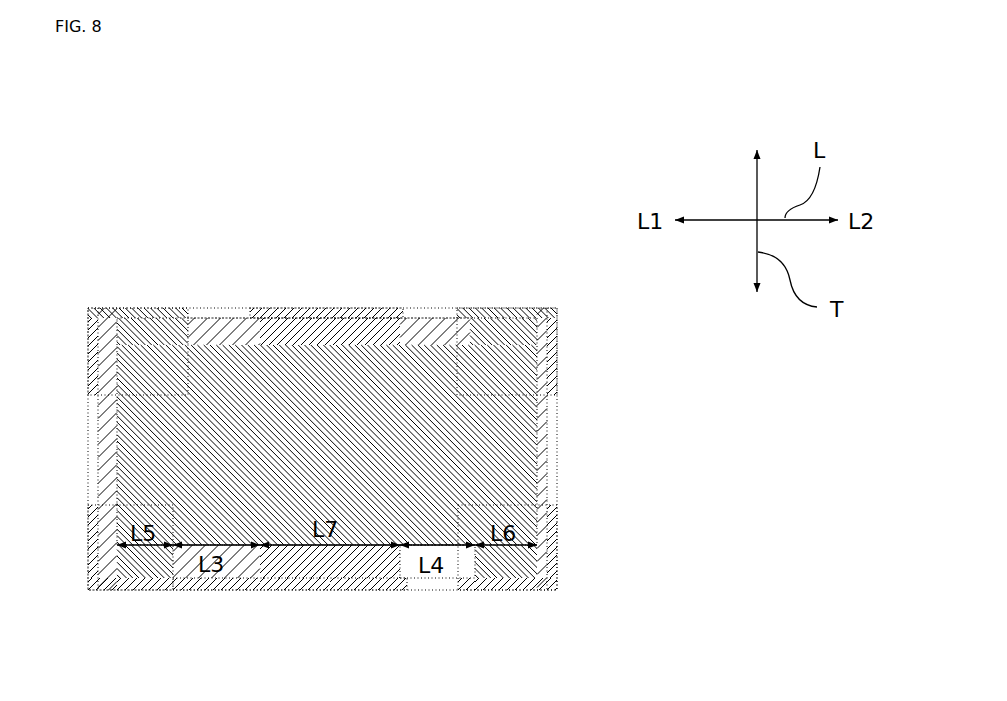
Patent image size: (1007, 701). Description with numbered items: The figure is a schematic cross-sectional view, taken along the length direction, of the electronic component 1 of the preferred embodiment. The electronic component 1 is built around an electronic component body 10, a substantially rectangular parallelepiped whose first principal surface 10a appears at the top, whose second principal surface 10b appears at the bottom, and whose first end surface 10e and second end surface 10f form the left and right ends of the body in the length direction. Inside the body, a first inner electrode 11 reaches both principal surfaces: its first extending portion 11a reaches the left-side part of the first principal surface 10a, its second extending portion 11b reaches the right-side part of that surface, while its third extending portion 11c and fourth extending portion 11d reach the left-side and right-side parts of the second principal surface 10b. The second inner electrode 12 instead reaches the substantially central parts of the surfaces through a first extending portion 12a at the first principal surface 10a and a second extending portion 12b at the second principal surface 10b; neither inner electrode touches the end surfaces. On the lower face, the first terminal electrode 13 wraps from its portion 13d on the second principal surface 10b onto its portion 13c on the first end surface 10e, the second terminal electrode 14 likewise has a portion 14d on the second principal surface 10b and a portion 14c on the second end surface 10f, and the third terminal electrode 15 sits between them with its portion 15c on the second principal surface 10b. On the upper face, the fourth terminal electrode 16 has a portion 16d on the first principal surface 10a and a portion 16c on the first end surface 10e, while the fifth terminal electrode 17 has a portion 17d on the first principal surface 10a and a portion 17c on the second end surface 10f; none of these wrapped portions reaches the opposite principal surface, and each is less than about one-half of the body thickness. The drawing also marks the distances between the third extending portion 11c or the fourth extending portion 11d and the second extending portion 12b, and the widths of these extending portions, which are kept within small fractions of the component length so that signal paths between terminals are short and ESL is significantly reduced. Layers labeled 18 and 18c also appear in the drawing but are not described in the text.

The electronic component 1 is at (443, 293).
The electronic component body 10 is at (207, 308).
The first principal surface 10a is at (220, 307).
The second principal surface 10b is at (220, 580).
The first end surface 10e is at (100, 432).
The second end surface 10f is at (550, 426).
The first inner electrode 11 is at (428, 578).
The first extending portion 11a is at (162, 308).
The second extending portion 11b is at (490, 307).
The third extending portion 11c is at (147, 583).
The fourth extending portion 11d is at (493, 592).
The second inner electrode 12 is at (273, 583).
The first extending portion 12a is at (372, 308).
The second extending portion 12b is at (300, 587).
The first terminal electrode 13 is at (122, 585).
The portion on the first end surface 13c is at (95, 544).
The portion on the second principal surface 13d is at (100, 586).
The second terminal electrode 14 is at (505, 585).
The portion on the second end surface 14c is at (556, 553).
The portion on the second principal surface 14d is at (530, 585).
The third terminal electrode 15 is at (358, 585).
The portion on the second principal surface 15c is at (325, 590).
The fourth terminal electrode 16 is at (132, 303).
The portion on the first end surface 16c is at (96, 336).
The portion on the first principal surface 16d is at (112, 306).
The fifth terminal electrode 17 is at (518, 308).
The portion on the second end surface 17c is at (556, 335).
The portion on the first principal surface 17d is at (543, 308).
The top insulating film 18 is at (342, 308).
The side portions of top insulating film 18c is at (293, 308).